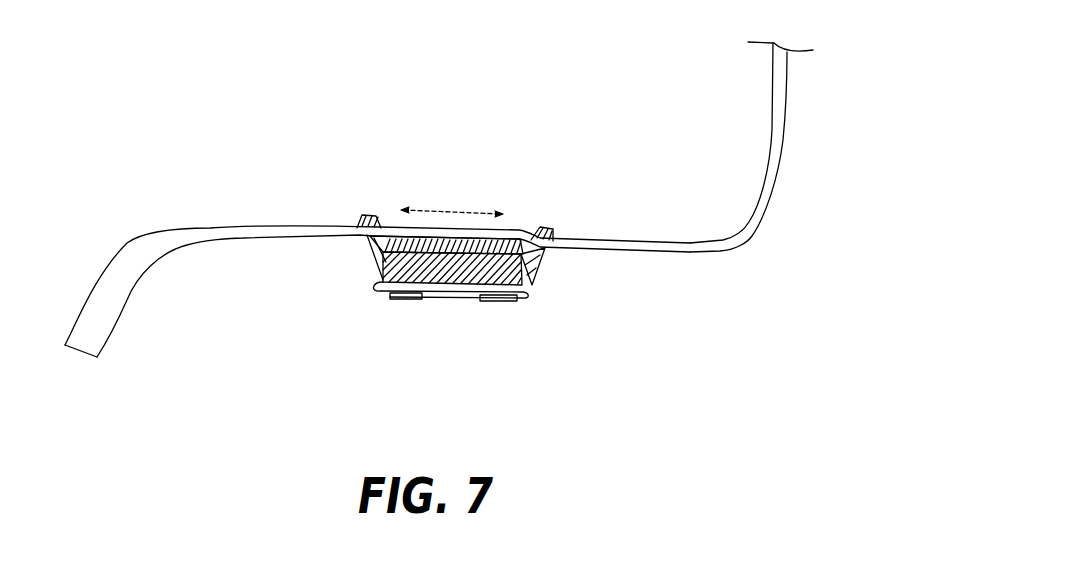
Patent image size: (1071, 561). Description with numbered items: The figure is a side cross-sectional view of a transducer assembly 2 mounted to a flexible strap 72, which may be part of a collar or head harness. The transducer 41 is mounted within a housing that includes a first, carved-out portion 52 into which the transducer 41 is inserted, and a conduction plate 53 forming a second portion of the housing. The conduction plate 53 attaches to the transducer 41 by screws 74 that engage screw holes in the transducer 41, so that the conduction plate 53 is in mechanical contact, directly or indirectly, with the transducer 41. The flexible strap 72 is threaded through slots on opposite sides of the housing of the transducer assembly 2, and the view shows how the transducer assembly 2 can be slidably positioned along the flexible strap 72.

The transducer assembly 2 is at (560, 147).
The transducer 41 is at (390, 288).
The carved-out portion 52 is at (545, 226).
The conduction plate 53 is at (527, 300).
The flexible strap 72 is at (710, 250).
The screws 74 is at (410, 299).